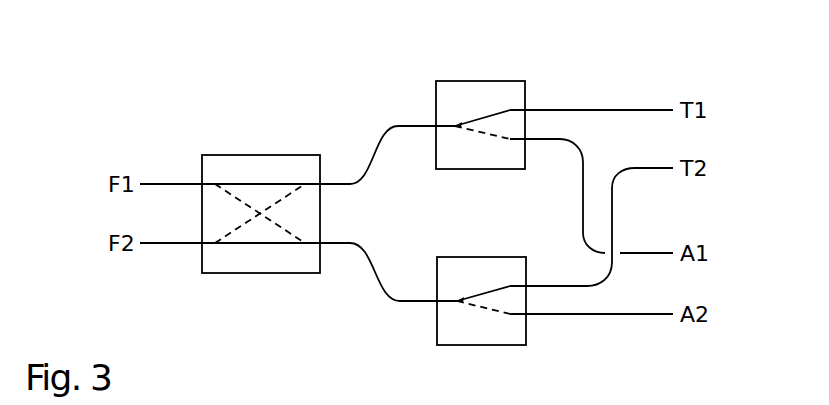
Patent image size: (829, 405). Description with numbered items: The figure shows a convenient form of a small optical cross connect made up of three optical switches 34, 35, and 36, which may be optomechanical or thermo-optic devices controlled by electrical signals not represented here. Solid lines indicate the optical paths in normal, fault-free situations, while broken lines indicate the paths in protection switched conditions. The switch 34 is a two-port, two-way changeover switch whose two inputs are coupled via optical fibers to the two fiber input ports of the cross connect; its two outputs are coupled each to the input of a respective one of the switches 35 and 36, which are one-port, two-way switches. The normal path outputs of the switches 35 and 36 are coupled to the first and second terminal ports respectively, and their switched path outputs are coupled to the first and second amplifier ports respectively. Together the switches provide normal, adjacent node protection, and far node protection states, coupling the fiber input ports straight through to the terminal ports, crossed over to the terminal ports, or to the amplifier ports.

The optical switch 34 is at (262, 165).
The optical switch 35 is at (473, 92).
The optical switch 36 is at (474, 265).